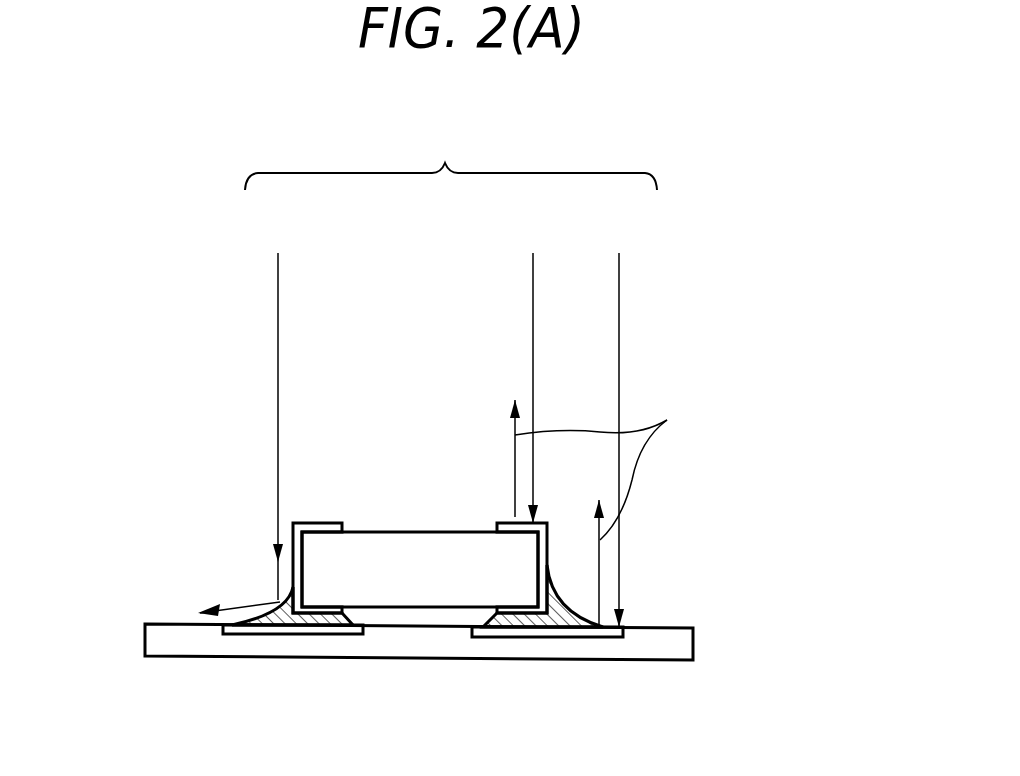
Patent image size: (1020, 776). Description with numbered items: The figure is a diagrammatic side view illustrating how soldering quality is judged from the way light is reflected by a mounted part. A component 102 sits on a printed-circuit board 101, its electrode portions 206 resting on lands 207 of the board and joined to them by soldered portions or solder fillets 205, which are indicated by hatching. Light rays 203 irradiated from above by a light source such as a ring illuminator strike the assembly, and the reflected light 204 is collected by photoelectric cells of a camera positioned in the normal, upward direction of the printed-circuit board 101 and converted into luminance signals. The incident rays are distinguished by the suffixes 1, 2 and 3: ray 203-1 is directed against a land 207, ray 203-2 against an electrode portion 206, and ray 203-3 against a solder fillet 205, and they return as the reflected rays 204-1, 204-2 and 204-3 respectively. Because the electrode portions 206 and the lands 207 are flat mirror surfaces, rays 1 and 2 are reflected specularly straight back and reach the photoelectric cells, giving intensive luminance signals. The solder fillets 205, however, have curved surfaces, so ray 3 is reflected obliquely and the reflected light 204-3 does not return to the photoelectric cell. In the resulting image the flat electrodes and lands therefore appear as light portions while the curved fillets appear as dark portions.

The printed-circuit board 101 is at (677, 638).
The component 102 is at (405, 550).
The light rays 203 is at (451, 161).
The reflected light 204 is at (614, 466).
The solder fillet 205 is at (567, 622).
The electrode portion 206 is at (323, 523).
The land 207 is at (500, 633).
The first incident and reflected ray pair 1 is at (607, 422).
The second incident and reflected ray pair 2 is at (523, 370).
The third incident and reflected ray pair 3 is at (232, 419).